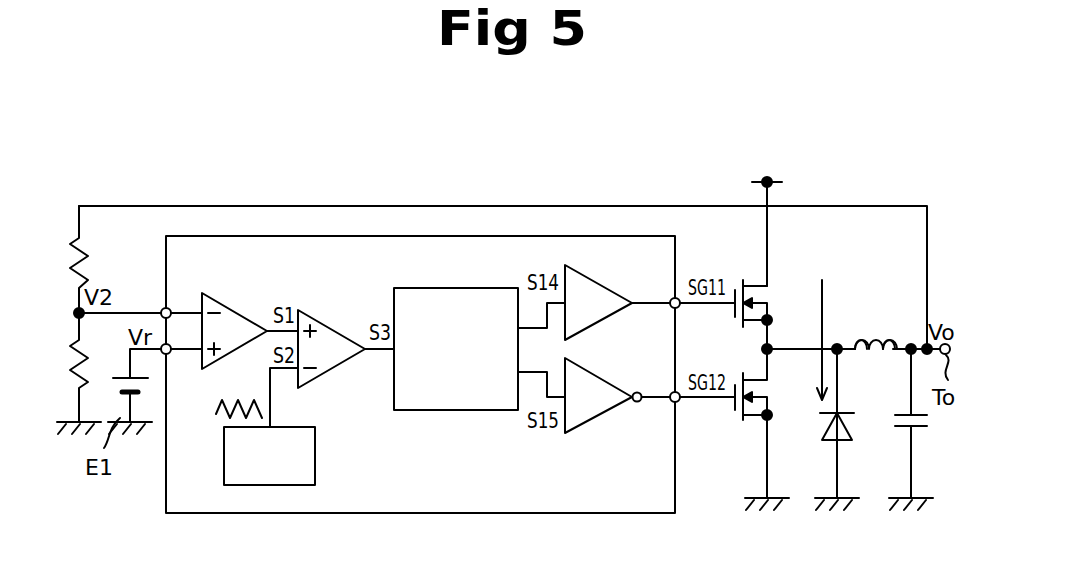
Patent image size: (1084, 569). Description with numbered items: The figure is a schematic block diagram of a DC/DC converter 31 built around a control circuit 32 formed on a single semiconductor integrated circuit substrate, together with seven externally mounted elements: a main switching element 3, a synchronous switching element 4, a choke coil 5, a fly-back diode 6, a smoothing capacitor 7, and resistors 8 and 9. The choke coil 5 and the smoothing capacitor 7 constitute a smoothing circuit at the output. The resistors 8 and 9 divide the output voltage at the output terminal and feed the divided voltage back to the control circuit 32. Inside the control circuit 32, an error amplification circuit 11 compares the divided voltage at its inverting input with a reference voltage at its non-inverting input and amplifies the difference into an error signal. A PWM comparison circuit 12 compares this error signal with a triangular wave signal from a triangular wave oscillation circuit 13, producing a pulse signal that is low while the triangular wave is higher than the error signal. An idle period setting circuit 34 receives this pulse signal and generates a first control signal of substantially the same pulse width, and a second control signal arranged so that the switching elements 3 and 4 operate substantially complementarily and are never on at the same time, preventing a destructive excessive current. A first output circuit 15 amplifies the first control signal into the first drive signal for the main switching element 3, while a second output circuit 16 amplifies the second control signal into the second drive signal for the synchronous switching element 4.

The DC/DC converter 31 is at (876, 155).
The control circuit 32 is at (675, 240).
The resistor 8 is at (86, 249).
The resistor 9 is at (86, 350).
The error amplification circuit 11 is at (240, 306).
The PWM comparison circuit 12 is at (332, 326).
The triangular wave oscillation circuit 13 is at (316, 457).
The idle period setting circuit 34 is at (452, 285).
The first output circuit 15 is at (598, 282).
The second output circuit 16 is at (598, 376).
The main switching element 3 is at (767, 290).
The synchronous switching element 4 is at (752, 423).
The choke coil 5 is at (878, 340).
The fly-back diode 6 is at (840, 445).
The smoothing capacitor 7 is at (918, 428).